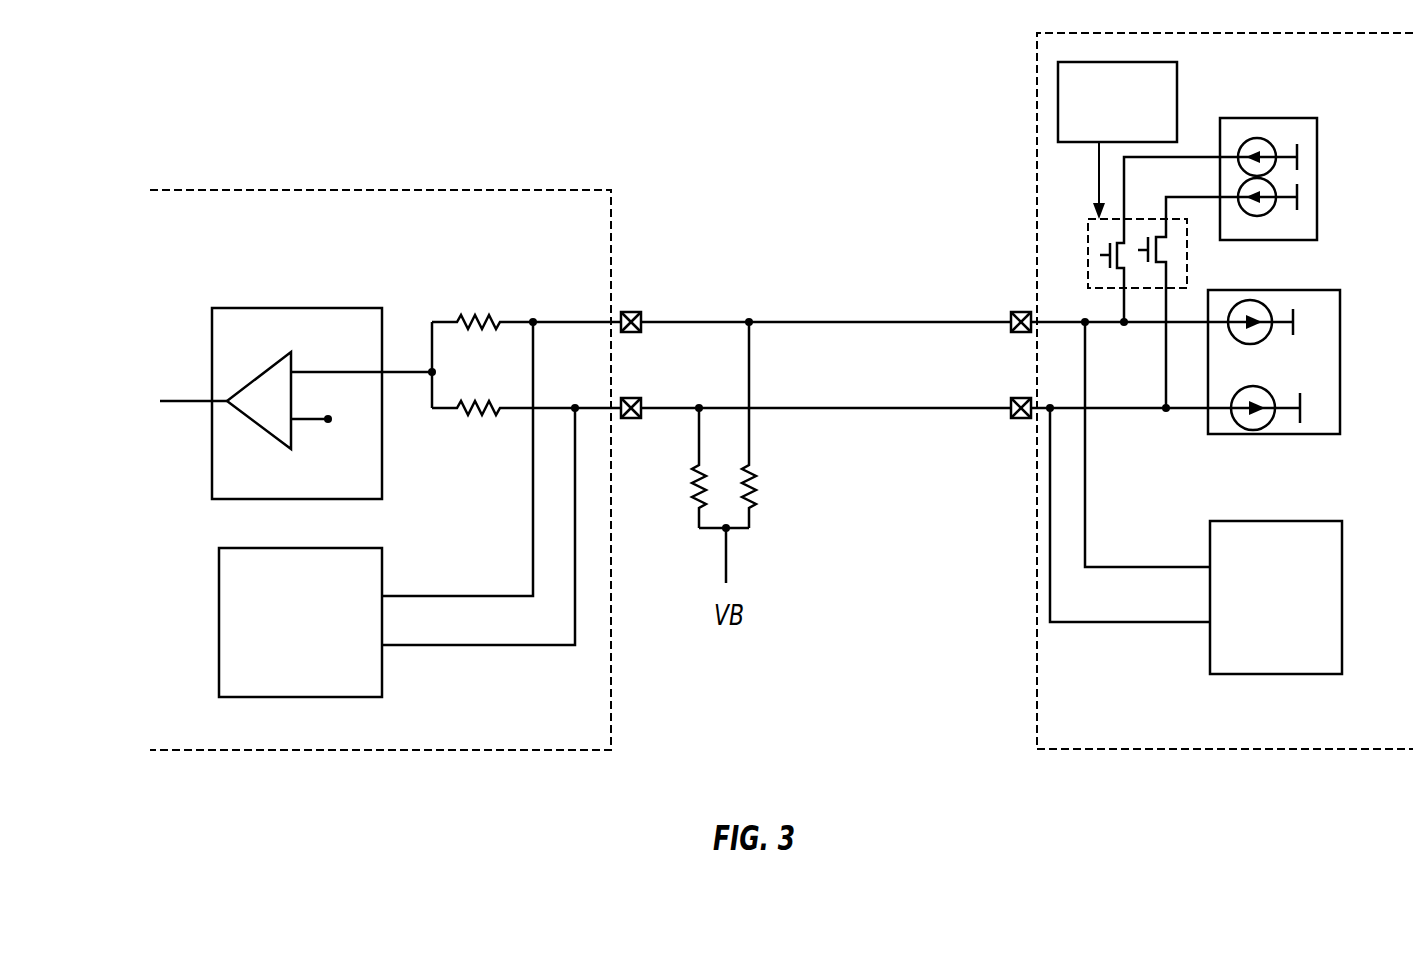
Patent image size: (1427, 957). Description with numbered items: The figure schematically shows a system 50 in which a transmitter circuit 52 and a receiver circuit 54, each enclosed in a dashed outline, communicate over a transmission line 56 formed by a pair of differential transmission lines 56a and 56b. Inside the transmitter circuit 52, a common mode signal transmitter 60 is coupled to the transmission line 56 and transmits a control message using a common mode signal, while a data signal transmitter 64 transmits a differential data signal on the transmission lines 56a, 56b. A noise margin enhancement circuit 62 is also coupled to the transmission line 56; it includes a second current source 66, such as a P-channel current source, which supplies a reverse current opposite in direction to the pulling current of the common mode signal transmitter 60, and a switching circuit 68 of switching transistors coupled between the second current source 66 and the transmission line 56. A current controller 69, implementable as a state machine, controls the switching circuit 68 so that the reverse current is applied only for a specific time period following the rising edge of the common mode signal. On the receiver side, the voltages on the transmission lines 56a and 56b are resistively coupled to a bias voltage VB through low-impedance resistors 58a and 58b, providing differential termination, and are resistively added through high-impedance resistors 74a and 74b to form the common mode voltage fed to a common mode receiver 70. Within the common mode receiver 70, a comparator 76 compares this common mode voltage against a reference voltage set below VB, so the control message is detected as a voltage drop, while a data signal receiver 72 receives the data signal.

The system 50 is at (858, 80).
The transmitter circuit 52 is at (1038, 702).
The receiver circuit 54 is at (613, 720).
The transmission line 56 is at (813, 300).
The differential transmission line 56a is at (880, 321).
The differential transmission line 56b is at (852, 407).
The resistor 58a is at (750, 468).
The resistor 58b is at (698, 468).
The common mode signal transmitter 60 is at (1340, 352).
The noise margin enhancement circuit 62 is at (1288, 100).
The data signal transmitter 64 is at (1277, 521).
The second current source 66 is at (1317, 175).
The switching circuit 68 is at (1187, 245).
The current controller 69 is at (1178, 97).
The common mode receiver 70 is at (280, 308).
The data signal receiver 72 is at (383, 578).
The resistor 74a is at (470, 318).
The resistor 74b is at (474, 421).
The comparator 76 is at (277, 356).